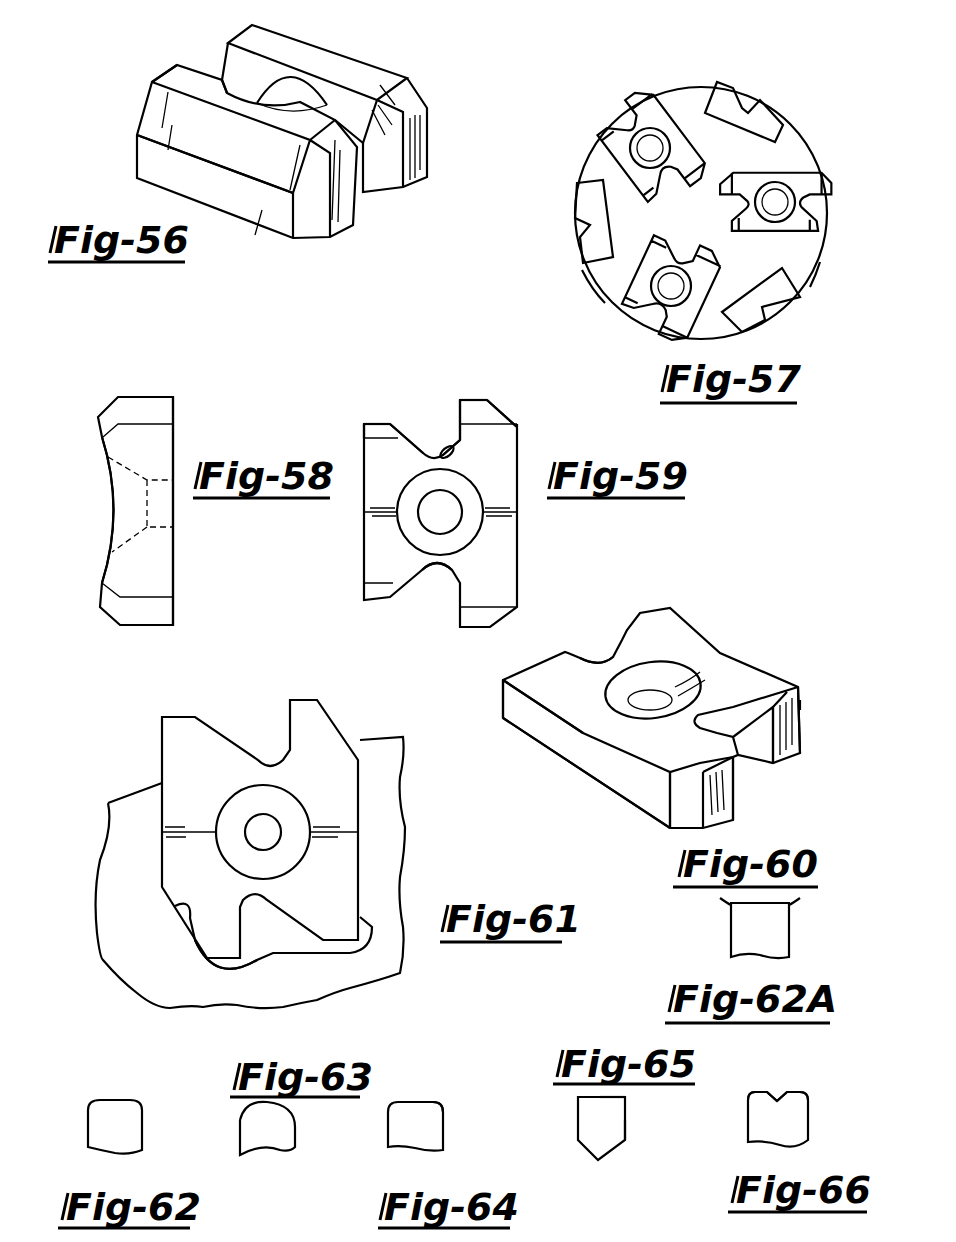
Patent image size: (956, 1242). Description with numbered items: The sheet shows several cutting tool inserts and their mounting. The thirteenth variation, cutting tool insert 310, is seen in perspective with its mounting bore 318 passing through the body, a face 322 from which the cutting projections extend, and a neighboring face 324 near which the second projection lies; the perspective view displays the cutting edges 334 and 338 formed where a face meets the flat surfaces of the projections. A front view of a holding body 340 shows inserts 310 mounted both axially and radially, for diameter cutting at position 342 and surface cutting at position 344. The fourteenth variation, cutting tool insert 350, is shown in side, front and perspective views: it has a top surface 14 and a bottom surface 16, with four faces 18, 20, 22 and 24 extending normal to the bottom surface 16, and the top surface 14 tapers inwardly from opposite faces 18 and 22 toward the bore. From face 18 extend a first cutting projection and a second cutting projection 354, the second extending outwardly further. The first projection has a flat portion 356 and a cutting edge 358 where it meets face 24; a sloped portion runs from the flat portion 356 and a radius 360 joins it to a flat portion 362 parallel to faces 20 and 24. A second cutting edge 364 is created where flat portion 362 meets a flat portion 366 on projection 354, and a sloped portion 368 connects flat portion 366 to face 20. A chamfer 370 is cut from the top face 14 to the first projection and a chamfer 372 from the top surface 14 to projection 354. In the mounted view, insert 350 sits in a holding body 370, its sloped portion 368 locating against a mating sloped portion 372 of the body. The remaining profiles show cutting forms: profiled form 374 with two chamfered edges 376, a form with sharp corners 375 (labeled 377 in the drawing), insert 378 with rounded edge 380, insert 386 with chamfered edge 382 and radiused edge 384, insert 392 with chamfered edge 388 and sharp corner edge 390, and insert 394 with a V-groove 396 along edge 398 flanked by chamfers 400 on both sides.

In FIG. 56, the cutting tool insert 310 is at (140, 103).
In FIG. 57, the cutting tool insert 310 is at (645, 90).
In FIG. 56, the mounting bore 318 is at (293, 88).
In FIG. 56, the face 322 is at (380, 196).
In FIG. 56, the face 324 is at (247, 200).
In FIG. 56, the cutting edge 334 is at (370, 63).
In FIG. 56, the cutting edge 338 is at (193, 65).
In FIG. 57, the holding body 340 is at (602, 303).
In FIG. 57, the position 342 is at (592, 283).
In FIG. 57, the position 344 is at (600, 150).
In FIG. 58, the cutting tool insert 350 is at (187, 411).
In FIG. 59, the cutting tool insert 350 is at (346, 567).
In FIG. 60, the cutting tool insert 350 is at (712, 627).
In FIG. 61, the cutting tool insert 350 is at (337, 727).
In FIG. 59, the second cutting projection 354 is at (477, 398).
In FIG. 60, the second cutting projection 354 is at (730, 795).
In FIG. 59, the flat portion 356 is at (378, 423).
In FIG. 60, the flat portion 356 is at (793, 732).
In FIG. 59, the cutting edge 358 is at (364, 422).
In FIG. 60, the cutting edge 358 is at (803, 703).
In FIG. 59, the radius 360 is at (457, 448).
In FIG. 59, the flat portion 362 is at (458, 430).
In FIG. 59, the second cutting edge 364 is at (460, 397).
In FIG. 59, the flat portion 366 is at (490, 399).
In FIG. 59, the sloped portion 368 is at (502, 414).
In FIG. 60, the sloped portion 368 is at (687, 817).
In FIG. 61, the sloped portion 368 is at (203, 953).
In FIG. 56, the chamfer 370 is at (190, 55).
In FIG. 60, the chamfer 370 is at (788, 687).
In FIG. 61, the chamfer 370 is at (130, 790).
In FIG. 60, the chamfer 372 is at (647, 803).
In FIG. 61, the chamfer 372 is at (183, 907).
In FIG. 62, the profiled form 374 is at (88, 1137).
In FIG. 62A, the sharp corners 375 is at (723, 900).
In FIG. 62, the chamfered edges 376 is at (140, 1100).
In FIG. 62A, the body portion 377 is at (731, 937).
In FIG. 63, the insert 378 is at (240, 1142).
In FIG. 63, the rounded edge 380 is at (287, 1105).
In FIG. 64, the chamfered edge 382 is at (390, 1104).
In FIG. 64, the radiused edge 384 is at (445, 1102).
In FIG. 64, the insert 386 is at (388, 1120).
In FIG. 65, the chamfered edge 388 is at (578, 1097).
In FIG. 65, the sharp corner edge 390 is at (627, 1097).
In FIG. 65, the insert 392 is at (625, 1127).
In FIG. 66, the insert 394 is at (808, 1123).
In FIG. 66, the V-groove 396 is at (778, 1090).
In FIG. 66, the edge 398 is at (767, 1090).
In FIG. 66, the chamfer 400 is at (750, 1093).
In FIG. 58, the top surface 14 is at (103, 568).
In FIG. 60, the top surface 14 is at (537, 685).
In FIG. 58, the bottom surface 16 is at (174, 567).
In FIG. 58, the face 18 is at (132, 397).
In FIG. 59, the face 18 is at (408, 428).
In FIG. 60, the face 18 is at (769, 785).
In FIG. 59, the face 20 is at (517, 530).
In FIG. 60, the face 20 is at (547, 748).
In FIG. 58, the face 22 is at (158, 626).
In FIG. 59, the face 22 is at (433, 580).
In FIG. 60, the face 22 is at (602, 650).
In FIG. 59, the face 24 is at (364, 538).